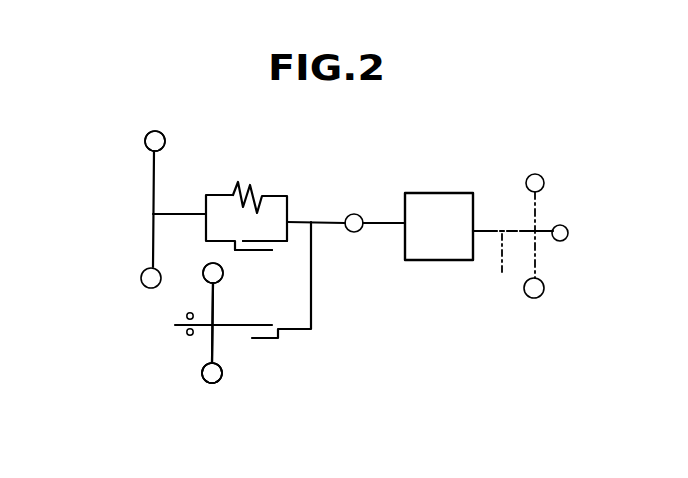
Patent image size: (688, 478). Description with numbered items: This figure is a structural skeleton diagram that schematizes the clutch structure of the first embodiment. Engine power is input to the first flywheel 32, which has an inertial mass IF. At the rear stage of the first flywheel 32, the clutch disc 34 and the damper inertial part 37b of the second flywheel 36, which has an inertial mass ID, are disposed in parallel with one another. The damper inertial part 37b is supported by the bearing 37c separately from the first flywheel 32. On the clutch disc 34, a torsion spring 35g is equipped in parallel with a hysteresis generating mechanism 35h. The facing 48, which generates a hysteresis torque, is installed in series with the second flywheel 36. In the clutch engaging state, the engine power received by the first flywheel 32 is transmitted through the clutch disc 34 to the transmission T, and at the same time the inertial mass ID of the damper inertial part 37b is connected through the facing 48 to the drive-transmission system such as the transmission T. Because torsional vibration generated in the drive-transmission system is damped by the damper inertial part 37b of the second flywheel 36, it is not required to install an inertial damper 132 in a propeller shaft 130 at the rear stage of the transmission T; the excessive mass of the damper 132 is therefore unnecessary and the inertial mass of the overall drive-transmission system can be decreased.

The first flywheel 32 is at (157, 167).
The inertial mass of first flywheel IF is at (141, 136).
The clutch disc 34 is at (291, 200).
The torsion spring 35g is at (236, 184).
The hysteresis generating mechanism 35h is at (258, 252).
The transmission T is at (447, 260).
The propeller shaft 130 is at (496, 266).
The inertial damper 132 is at (544, 293).
The facing 48 is at (262, 342).
The bearing 37c is at (186, 335).
The damper inertial part 37b is at (211, 353).
The second flywheel 36 is at (212, 323).
The inertial mass of damper inertial part ID is at (223, 379).